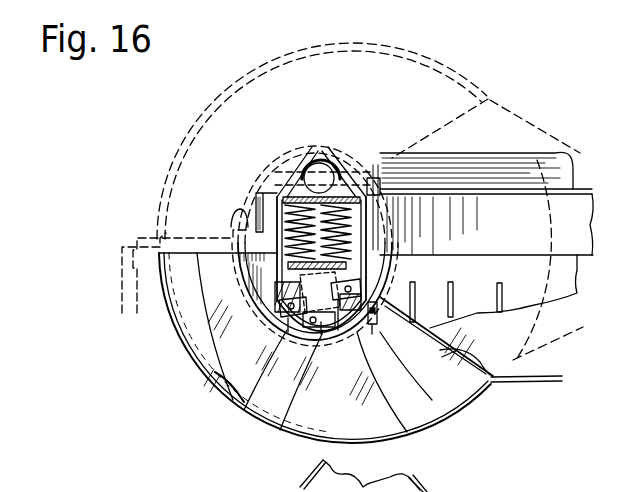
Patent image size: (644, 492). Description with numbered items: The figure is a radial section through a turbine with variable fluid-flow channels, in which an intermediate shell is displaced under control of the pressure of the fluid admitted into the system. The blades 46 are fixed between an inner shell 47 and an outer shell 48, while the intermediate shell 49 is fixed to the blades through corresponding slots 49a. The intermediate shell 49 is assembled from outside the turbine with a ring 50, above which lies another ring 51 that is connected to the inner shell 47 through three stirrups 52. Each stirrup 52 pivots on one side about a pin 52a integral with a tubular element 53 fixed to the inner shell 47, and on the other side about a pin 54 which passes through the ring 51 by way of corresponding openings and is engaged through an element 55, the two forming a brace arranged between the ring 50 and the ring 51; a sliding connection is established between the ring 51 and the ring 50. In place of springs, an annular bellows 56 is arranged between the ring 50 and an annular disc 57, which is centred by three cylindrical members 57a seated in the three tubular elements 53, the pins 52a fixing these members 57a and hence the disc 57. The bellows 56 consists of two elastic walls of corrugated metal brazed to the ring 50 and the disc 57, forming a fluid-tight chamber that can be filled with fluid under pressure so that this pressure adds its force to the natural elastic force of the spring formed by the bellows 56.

The blades 46 is at (495, 384).
The inner shell 47 is at (383, 303).
The outer shell 48 is at (228, 397).
The intermediate shell 49 is at (210, 368).
The slots 49a is at (398, 302).
The ring 50 is at (382, 228).
The ring 51 is at (422, 172).
The stirrup 52 is at (262, 240).
The pin 52a is at (243, 410).
The tubular element 53 is at (413, 433).
The pin 54 is at (289, 201).
The element 55 is at (338, 180).
The annular bellows 56 is at (276, 190).
The annular disc 57 is at (300, 268).
The cylindrical members 57a is at (282, 429).